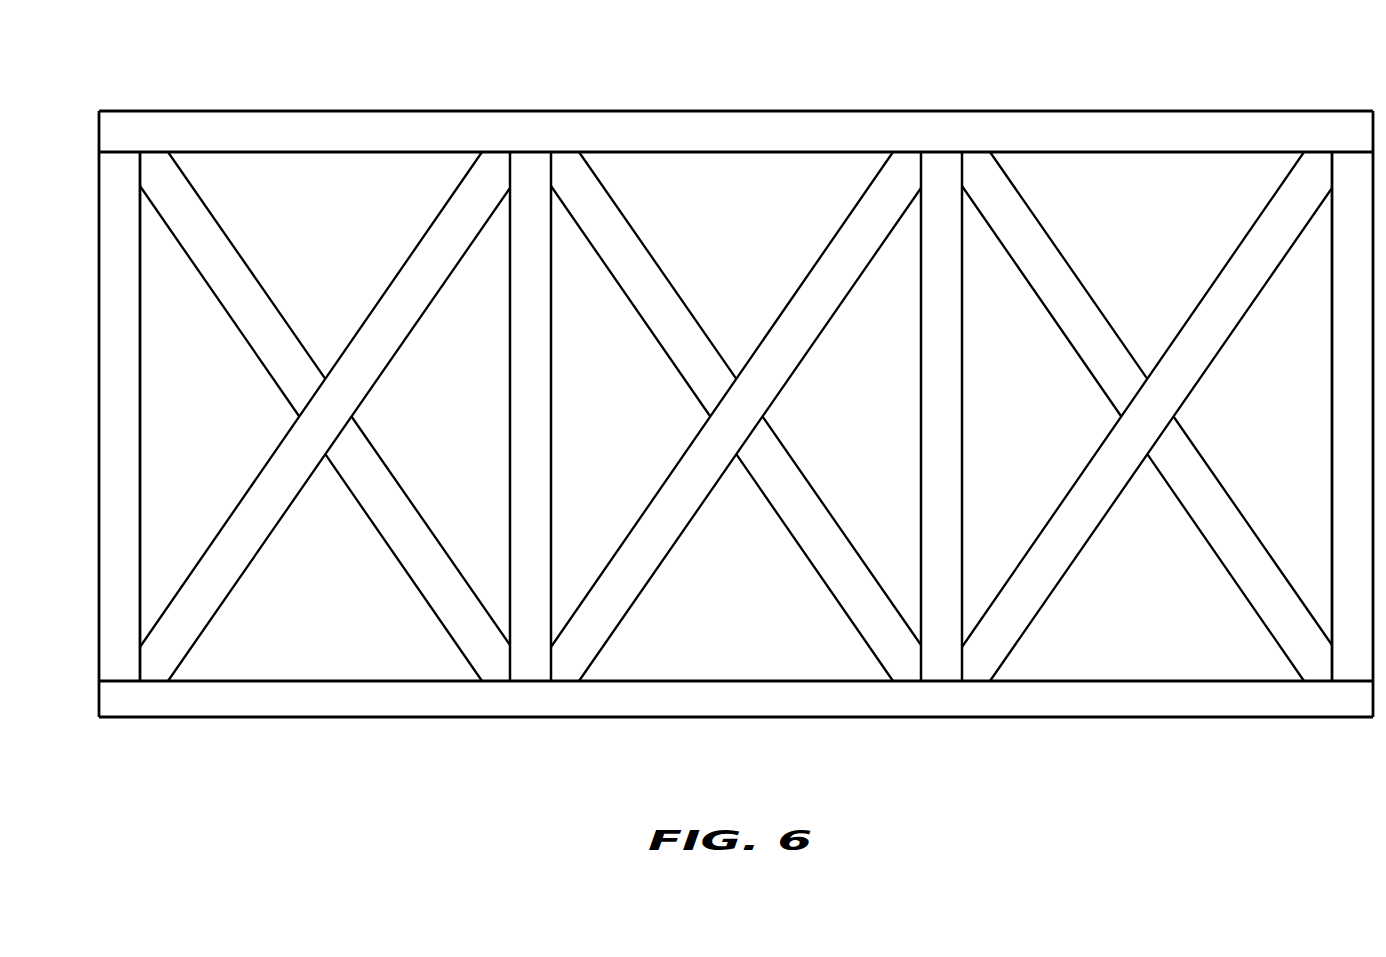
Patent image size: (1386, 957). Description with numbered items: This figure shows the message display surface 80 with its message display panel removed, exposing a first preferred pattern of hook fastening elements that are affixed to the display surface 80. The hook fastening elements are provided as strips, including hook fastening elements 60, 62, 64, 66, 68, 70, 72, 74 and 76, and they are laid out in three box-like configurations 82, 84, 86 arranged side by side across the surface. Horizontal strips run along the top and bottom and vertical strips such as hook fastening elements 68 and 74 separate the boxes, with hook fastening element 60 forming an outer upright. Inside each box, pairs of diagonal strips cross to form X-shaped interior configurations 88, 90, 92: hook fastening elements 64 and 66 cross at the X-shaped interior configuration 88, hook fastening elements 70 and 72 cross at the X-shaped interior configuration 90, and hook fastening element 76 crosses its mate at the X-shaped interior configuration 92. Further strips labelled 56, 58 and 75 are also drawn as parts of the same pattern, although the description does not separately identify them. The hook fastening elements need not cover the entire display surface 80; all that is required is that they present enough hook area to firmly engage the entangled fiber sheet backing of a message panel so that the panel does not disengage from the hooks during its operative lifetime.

The left end vertical post 56 is at (135, 462).
The top horizontal rail 58 is at (632, 142).
The hook fastening element 60 is at (1368, 393).
The hook fastening element 62 is at (748, 707).
The hook fastening element 64 is at (338, 428).
The hook fastening element 66 is at (432, 561).
The hook fastening element 68 is at (545, 457).
The hook fastening element 70 is at (688, 340).
The hook fastening element 72 is at (751, 423).
The hook fastening element 74 is at (958, 467).
The diagonal brace 75 is at (1162, 423).
The hook fastening element 76 is at (1088, 322).
The display surface 80 is at (810, 180).
The box-like configuration 82 is at (407, 110).
The box-like configuration 84 is at (688, 110).
The box-like configuration 86 is at (1067, 110).
The X-shaped interior configuration 88 is at (322, 352).
The X-shaped interior configuration 90 is at (733, 358).
The X-shaped interior configuration 92 is at (1143, 361).